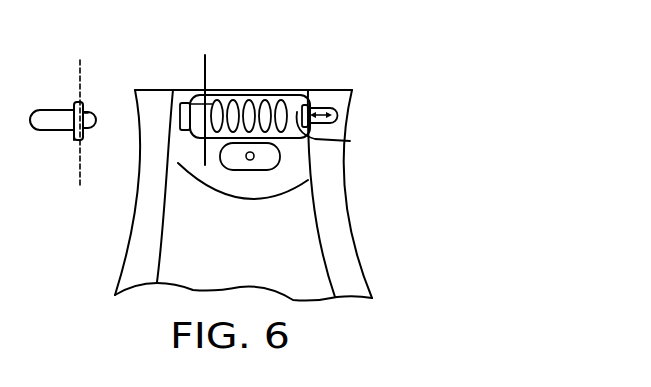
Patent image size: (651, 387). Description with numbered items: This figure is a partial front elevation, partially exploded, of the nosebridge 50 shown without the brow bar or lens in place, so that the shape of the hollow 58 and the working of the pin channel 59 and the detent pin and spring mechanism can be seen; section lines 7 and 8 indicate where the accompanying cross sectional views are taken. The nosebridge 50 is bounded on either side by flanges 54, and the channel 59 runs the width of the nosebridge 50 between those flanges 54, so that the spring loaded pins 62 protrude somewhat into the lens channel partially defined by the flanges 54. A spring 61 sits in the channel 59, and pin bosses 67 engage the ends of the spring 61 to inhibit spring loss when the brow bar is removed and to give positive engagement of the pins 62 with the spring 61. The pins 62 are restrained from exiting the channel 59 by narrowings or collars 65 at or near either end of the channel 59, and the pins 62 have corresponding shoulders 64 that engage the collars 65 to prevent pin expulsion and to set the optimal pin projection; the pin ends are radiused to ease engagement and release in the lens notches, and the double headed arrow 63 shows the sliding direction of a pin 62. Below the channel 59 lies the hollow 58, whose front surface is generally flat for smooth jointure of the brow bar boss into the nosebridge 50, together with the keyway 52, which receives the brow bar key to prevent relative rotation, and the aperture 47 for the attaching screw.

The aperture 47 is at (250, 162).
The nosebridge 50 is at (372, 216).
The keyway 52 is at (267, 162).
The flanges 54 is at (348, 187).
The hollow 58 is at (225, 190).
The pin channel 59 is at (292, 103).
The spring 61 is at (255, 102).
The pins 62 is at (53, 110).
The direction arrow 63 is at (313, 105).
The shoulders 64 is at (74, 140).
The collars 65 is at (180, 106).
The pin bosses 67 is at (90, 113).
The section line 7- 7 is at (80, 60).
The section line 8- 8 is at (205, 55).